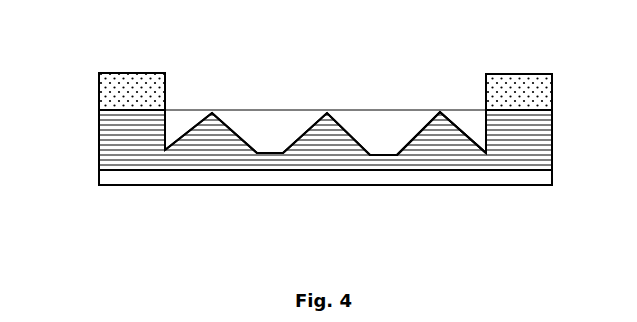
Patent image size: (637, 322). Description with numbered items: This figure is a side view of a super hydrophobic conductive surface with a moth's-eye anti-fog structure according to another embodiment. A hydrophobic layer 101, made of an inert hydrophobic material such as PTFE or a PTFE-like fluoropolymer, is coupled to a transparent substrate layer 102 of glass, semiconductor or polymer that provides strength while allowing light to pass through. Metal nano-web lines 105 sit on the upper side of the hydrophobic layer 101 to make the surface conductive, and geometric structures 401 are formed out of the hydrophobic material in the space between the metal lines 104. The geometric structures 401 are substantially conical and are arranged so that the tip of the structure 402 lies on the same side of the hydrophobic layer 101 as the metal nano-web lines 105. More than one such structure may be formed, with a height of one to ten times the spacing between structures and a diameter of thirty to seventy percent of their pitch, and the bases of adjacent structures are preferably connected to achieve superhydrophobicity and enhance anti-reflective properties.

The hydrophobic layer 101 is at (100, 157).
The substrate layer 102 is at (193, 182).
The metal lines 104 is at (463, 118).
The metal nano-web lines 105 is at (99, 89).
The geometric structures 401 is at (432, 142).
The tip of the structure 402 is at (441, 110).